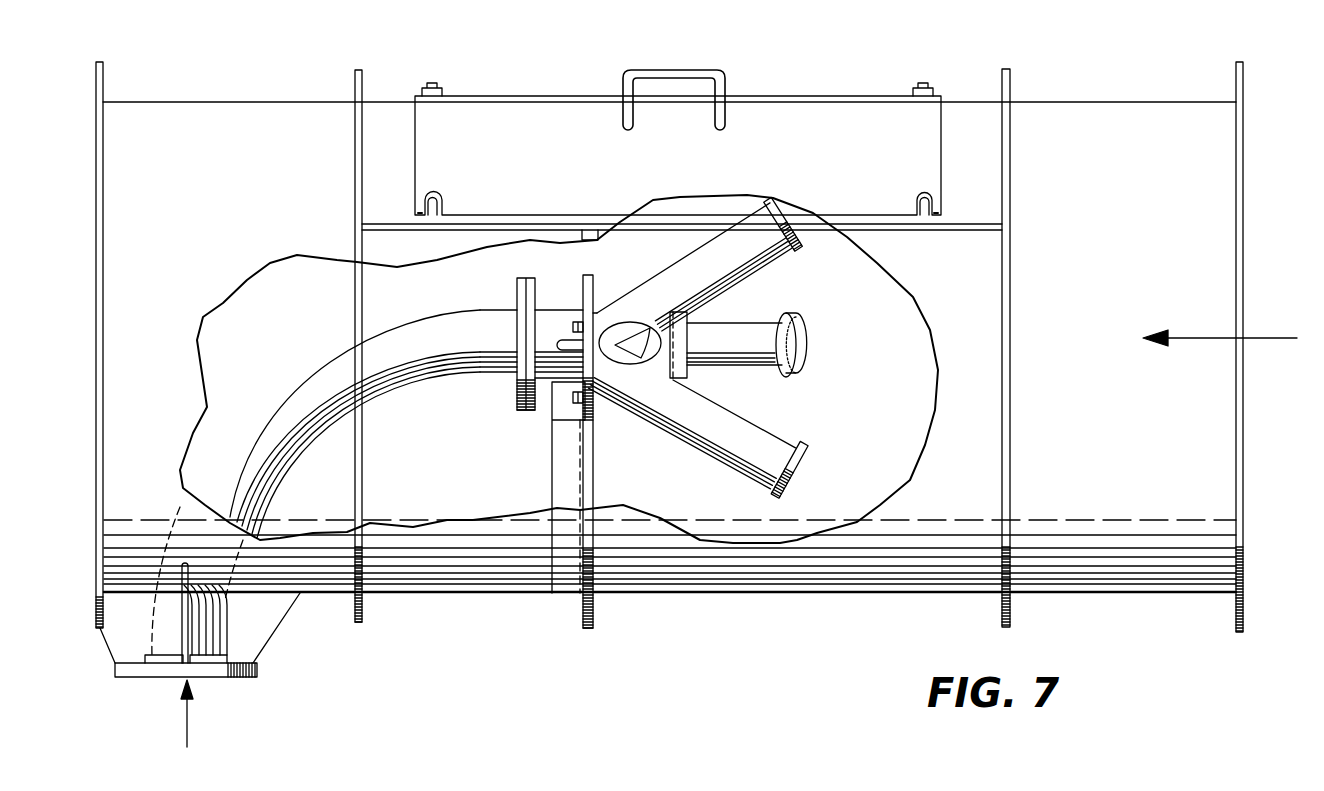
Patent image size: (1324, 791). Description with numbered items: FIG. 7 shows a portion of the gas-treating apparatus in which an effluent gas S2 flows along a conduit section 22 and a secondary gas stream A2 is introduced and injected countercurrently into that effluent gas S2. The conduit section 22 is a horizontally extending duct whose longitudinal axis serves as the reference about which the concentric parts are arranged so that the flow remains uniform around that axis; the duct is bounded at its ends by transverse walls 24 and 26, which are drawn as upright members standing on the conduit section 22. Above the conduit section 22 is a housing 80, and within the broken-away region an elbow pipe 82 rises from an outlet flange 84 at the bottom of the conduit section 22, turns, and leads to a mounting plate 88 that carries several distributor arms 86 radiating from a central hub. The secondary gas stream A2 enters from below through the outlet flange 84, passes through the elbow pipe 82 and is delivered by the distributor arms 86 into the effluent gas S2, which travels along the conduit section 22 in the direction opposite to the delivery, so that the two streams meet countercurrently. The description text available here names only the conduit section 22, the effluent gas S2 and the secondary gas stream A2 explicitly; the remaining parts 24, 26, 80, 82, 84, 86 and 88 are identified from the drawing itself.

The conduit section 22 is at (737, 602).
The end wall 24 is at (1244, 620).
The end wall 26 is at (103, 200).
The housing 80 is at (850, 100).
The elbow pipe 82 is at (384, 378).
The outlet flange 84 is at (257, 679).
The distributor arms 86 is at (719, 276).
The mounting plate 88 is at (593, 292).
The effluent gas stream S2 is at (1232, 344).
The secondary gas stream A2 is at (201, 721).